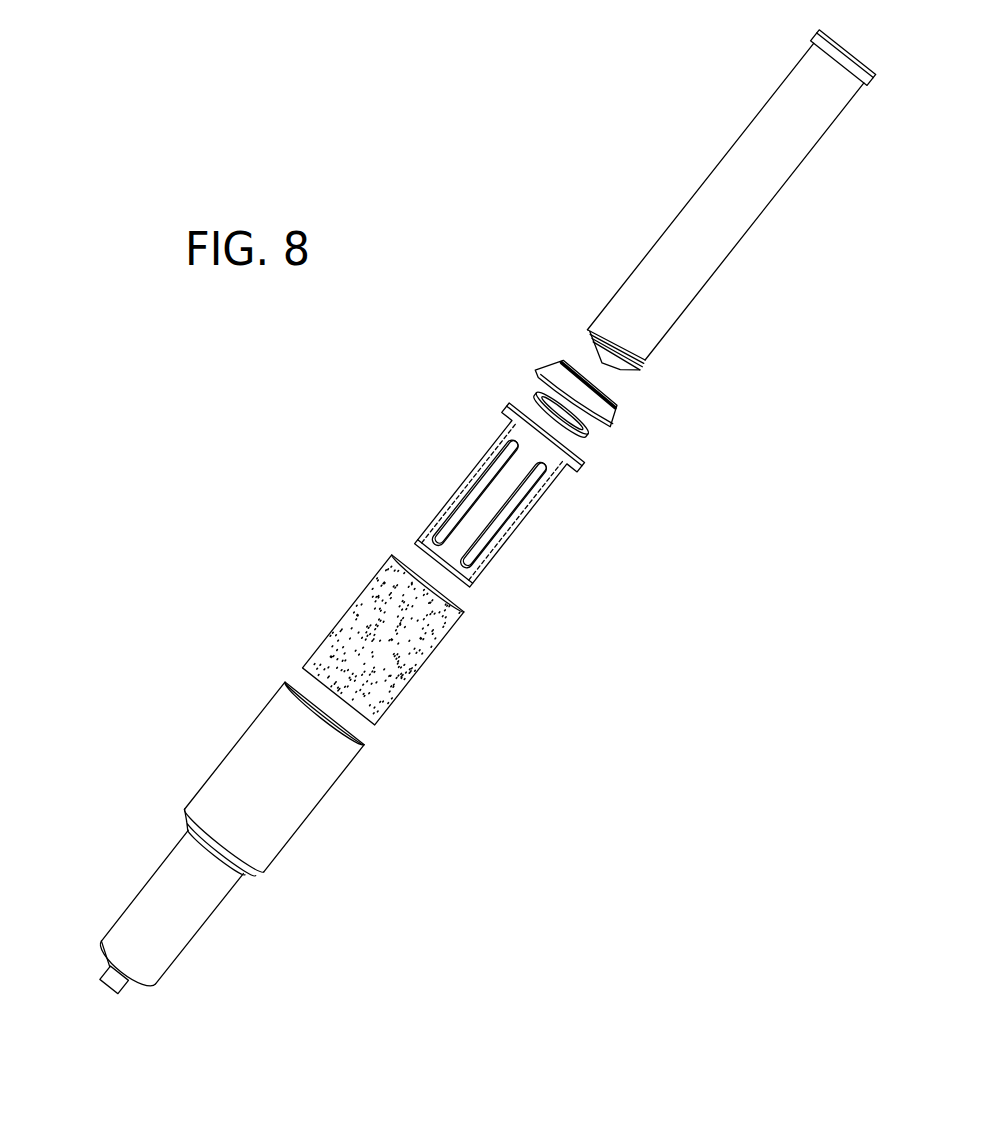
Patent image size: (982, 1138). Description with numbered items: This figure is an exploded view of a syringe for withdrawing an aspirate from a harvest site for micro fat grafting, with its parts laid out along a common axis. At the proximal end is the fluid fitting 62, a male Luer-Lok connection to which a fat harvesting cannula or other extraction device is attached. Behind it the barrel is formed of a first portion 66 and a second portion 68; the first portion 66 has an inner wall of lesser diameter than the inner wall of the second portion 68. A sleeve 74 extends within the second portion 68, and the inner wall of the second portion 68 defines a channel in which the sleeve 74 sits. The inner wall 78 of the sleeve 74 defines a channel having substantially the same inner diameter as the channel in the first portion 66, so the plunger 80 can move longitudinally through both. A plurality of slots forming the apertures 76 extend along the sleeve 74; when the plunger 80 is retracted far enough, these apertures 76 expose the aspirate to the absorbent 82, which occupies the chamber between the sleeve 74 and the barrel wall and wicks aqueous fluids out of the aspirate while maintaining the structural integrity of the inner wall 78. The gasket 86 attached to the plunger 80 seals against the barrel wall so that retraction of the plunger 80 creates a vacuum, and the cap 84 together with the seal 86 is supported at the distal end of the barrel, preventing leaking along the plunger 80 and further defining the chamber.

The fluid fitting 62 is at (110, 987).
The first portion of the barrel 66 is at (203, 927).
The second portion of the barrel 68 is at (227, 757).
The absorbent 82 is at (410, 680).
The sleeve 74 is at (468, 475).
The apertures 76 is at (440, 515).
The inner wall of the sleeve 78 is at (522, 518).
The gasket 86 is at (592, 437).
The cap 84 is at (552, 362).
The plunger 80 is at (767, 213).